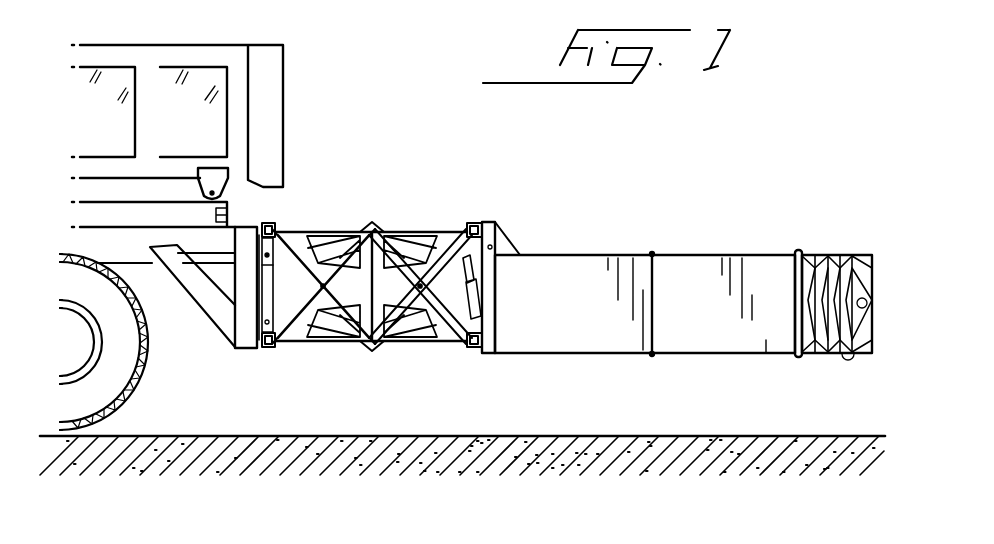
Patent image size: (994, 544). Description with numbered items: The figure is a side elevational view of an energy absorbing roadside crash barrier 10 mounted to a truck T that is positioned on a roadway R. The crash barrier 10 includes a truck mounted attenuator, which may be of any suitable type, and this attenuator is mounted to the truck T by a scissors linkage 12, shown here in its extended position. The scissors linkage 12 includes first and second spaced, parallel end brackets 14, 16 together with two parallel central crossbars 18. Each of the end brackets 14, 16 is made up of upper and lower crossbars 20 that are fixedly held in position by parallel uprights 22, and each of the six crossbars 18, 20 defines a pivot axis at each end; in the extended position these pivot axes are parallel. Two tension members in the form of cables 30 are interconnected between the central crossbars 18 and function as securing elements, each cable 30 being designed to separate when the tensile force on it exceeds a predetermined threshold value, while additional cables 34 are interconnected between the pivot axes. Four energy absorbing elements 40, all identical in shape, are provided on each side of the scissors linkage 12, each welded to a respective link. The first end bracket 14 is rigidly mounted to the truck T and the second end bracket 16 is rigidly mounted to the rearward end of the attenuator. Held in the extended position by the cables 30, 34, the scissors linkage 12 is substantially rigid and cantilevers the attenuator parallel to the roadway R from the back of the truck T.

The crash barrier 10 is at (505, 230).
The scissors linkage 12 is at (338, 388).
The first end bracket 14 is at (237, 363).
The second end bracket 16 is at (500, 365).
The central crossbar 18 is at (373, 226).
The crossbar 20 is at (274, 224).
The upright 22 is at (242, 298).
The cable 30 is at (398, 224).
The cable 34 is at (302, 232).
The energy absorbing element 40 is at (327, 227).
The truck T is at (274, 104).
The roadway R is at (815, 437).